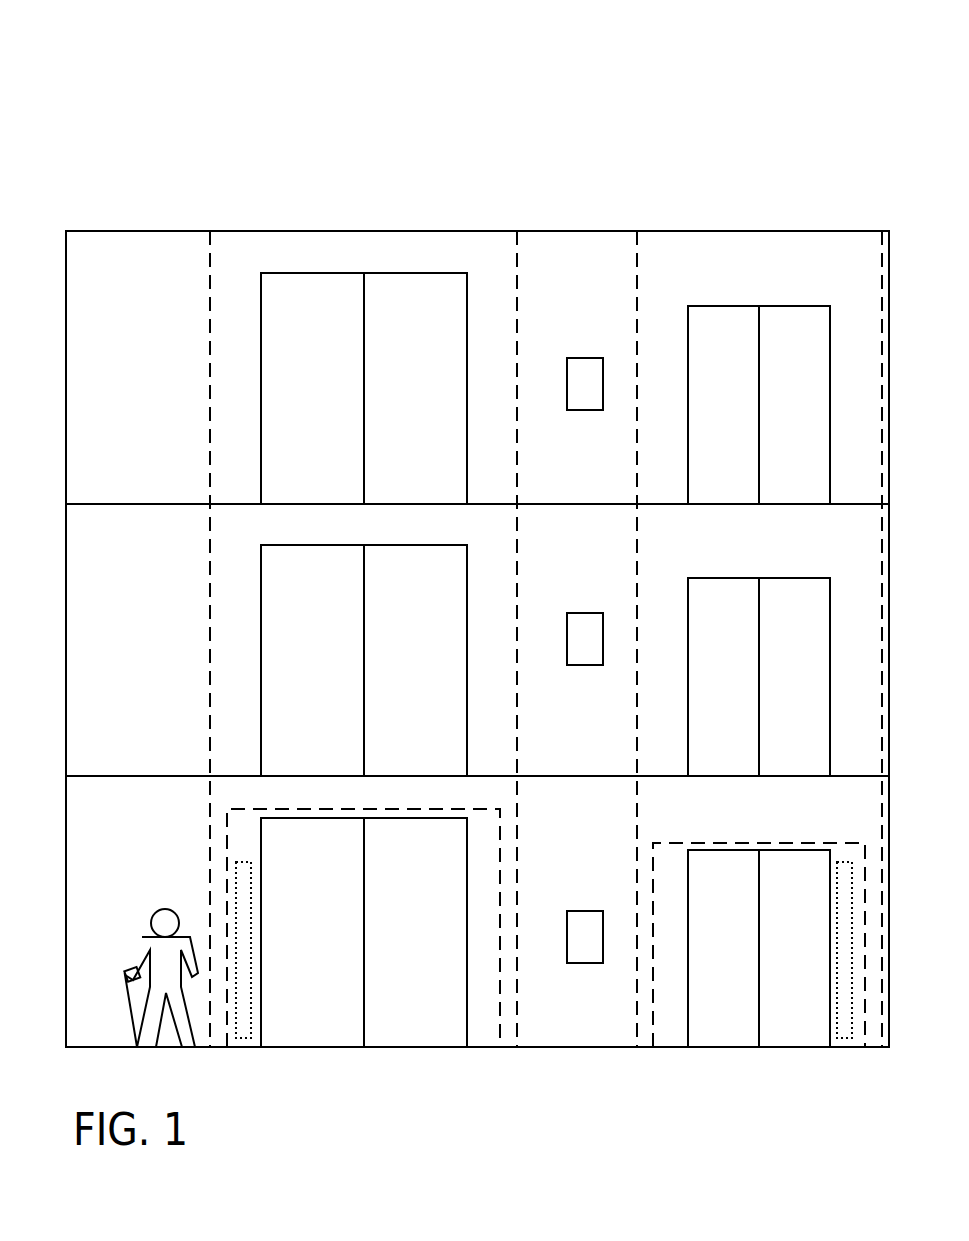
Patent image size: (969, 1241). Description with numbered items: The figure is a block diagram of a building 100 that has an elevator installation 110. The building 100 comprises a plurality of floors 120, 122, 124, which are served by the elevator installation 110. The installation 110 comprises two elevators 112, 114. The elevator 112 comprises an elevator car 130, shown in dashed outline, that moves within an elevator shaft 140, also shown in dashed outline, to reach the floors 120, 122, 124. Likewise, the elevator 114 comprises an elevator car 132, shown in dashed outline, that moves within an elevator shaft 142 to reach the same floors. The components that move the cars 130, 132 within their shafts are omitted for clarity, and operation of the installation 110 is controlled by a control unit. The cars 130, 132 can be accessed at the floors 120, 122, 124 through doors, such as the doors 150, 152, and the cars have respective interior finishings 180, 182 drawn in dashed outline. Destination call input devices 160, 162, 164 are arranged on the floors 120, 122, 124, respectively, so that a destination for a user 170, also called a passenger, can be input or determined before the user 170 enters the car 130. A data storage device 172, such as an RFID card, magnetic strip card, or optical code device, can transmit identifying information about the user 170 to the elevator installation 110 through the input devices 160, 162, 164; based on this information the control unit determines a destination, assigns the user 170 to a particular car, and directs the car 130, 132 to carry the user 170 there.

The building 100 is at (178, 75).
The elevator installation 110 is at (535, 156).
The elevator 112 is at (368, 208).
The elevator 114 is at (761, 209).
The floor 120 is at (142, 812).
The floor 122 is at (142, 546).
The floor 124 is at (140, 281).
The elevator car 130 is at (488, 1020).
The elevator car 132 is at (675, 1032).
The elevator shaft 140 is at (268, 271).
The elevator shaft 142 is at (692, 269).
The door 150 is at (327, 854).
The door 152 is at (739, 887).
The destination call input device 160 is at (585, 935).
The destination call input device 162 is at (582, 627).
The destination call input device 164 is at (587, 385).
The user 170 is at (165, 908).
The data storage device 172 is at (135, 988).
The interior finishing 180 is at (243, 1027).
The interior finishing 182 is at (843, 1030).